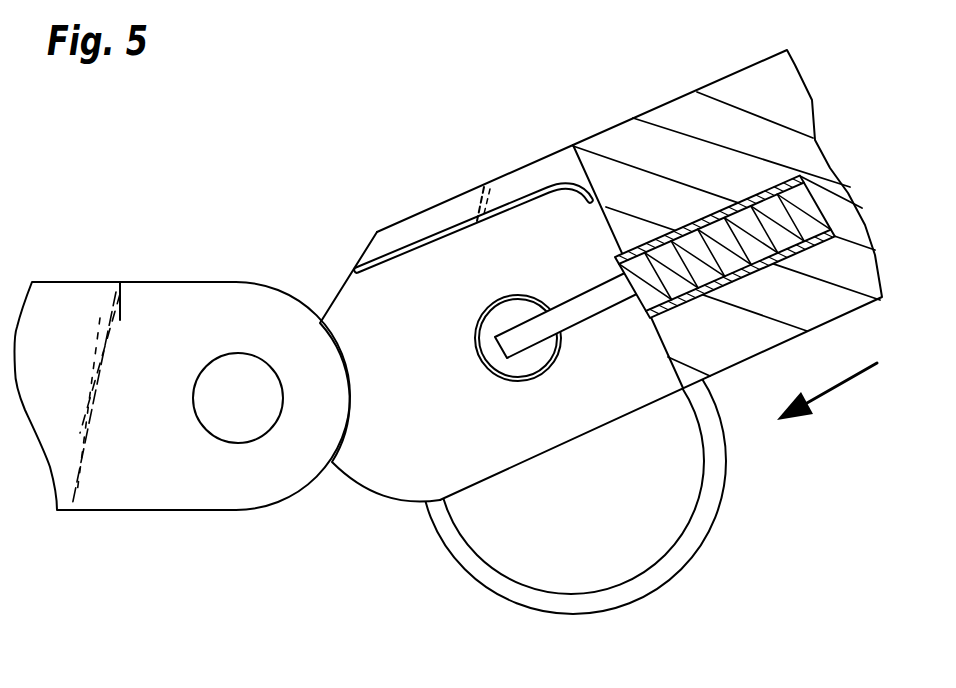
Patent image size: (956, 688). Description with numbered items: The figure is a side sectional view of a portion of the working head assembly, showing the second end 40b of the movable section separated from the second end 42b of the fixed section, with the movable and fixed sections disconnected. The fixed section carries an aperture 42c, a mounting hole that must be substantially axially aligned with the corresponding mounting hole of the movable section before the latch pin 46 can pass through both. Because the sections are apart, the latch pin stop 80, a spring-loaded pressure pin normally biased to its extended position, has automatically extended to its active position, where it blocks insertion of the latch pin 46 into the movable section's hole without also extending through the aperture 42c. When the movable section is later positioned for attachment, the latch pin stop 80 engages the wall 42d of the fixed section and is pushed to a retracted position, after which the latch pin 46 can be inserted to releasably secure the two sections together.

The second end of the movable section 40b is at (627, 120).
The second end of the fixed section 42b is at (110, 513).
The aperture 42c is at (230, 427).
The wall 42d is at (352, 397).
The latch pin 46 is at (503, 370).
The latch pin stop 80 is at (568, 300).